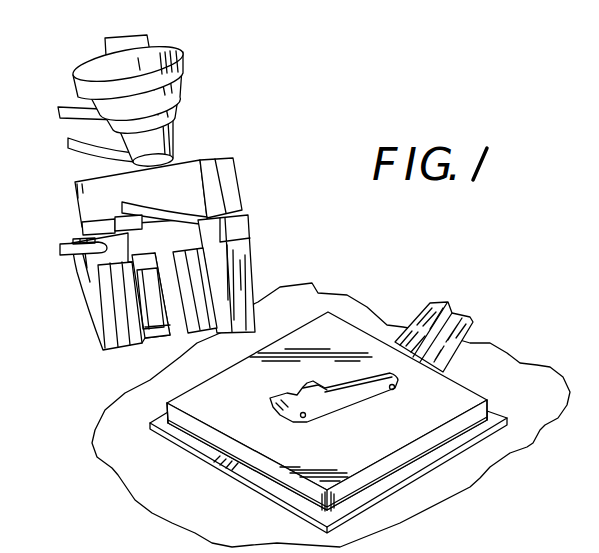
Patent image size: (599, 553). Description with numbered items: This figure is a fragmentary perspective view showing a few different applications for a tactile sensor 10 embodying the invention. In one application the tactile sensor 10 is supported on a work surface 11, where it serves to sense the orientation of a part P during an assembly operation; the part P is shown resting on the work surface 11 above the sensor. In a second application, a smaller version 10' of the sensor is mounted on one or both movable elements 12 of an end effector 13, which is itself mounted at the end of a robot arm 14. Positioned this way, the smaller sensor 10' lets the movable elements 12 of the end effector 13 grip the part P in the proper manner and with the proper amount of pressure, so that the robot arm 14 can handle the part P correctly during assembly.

The tactile sensor 10 is at (331, 415).
The smaller version of the tactile sensor 10' is at (121, 320).
The work surface 11 is at (463, 472).
The movable elements 12 is at (88, 293).
The end effector 13 is at (186, 166).
The robot arm 14 is at (172, 60).
The part P is at (345, 398).